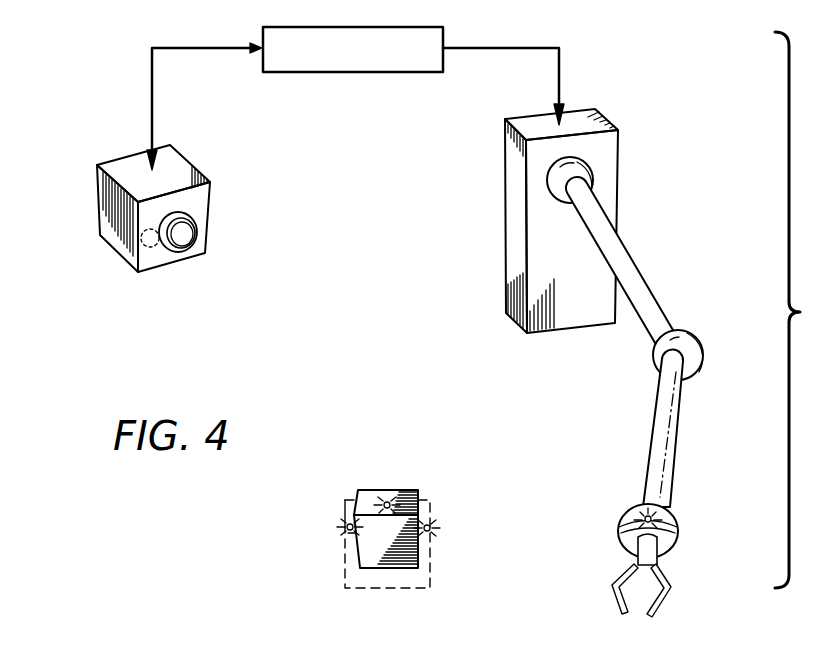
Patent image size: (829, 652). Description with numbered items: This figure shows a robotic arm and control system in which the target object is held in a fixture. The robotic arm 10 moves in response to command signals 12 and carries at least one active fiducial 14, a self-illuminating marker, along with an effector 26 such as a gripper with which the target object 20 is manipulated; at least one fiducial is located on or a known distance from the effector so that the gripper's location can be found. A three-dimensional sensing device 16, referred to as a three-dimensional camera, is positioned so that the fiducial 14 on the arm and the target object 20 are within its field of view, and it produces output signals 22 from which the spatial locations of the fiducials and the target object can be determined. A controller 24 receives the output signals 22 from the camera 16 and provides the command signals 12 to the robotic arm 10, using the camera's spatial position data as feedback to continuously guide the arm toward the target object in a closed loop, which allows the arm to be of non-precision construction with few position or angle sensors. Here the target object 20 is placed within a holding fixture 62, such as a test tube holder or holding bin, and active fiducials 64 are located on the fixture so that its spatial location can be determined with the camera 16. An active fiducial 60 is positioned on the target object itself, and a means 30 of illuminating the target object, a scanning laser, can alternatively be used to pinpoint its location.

The robotic arm 10 is at (630, 333).
The command signals 12 is at (559, 78).
The active fiducial 14 is at (645, 517).
The 3D sensing device 16 is at (97, 208).
The target object 20 is at (403, 490).
The output signals 22 is at (150, 100).
The controller 24 is at (340, 72).
The effector 26 is at (680, 552).
The means of illuminating target object 30 is at (148, 246).
The light emitter on workpiece 60 is at (385, 502).
The holding fixture 62 is at (345, 560).
The active fiducials 64 is at (348, 525).